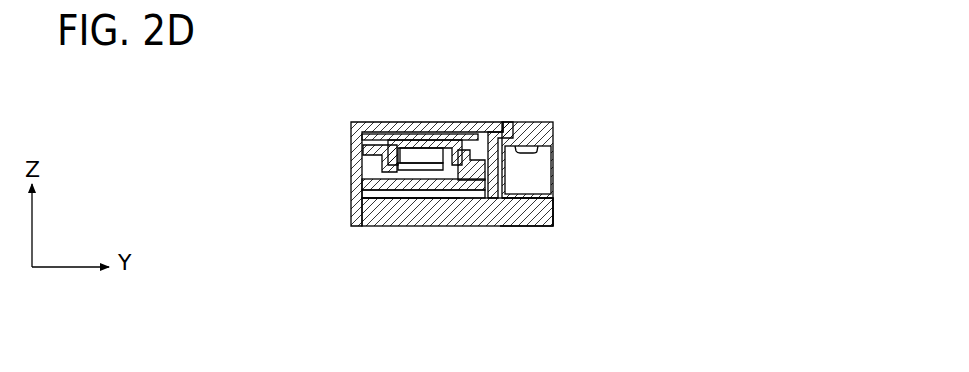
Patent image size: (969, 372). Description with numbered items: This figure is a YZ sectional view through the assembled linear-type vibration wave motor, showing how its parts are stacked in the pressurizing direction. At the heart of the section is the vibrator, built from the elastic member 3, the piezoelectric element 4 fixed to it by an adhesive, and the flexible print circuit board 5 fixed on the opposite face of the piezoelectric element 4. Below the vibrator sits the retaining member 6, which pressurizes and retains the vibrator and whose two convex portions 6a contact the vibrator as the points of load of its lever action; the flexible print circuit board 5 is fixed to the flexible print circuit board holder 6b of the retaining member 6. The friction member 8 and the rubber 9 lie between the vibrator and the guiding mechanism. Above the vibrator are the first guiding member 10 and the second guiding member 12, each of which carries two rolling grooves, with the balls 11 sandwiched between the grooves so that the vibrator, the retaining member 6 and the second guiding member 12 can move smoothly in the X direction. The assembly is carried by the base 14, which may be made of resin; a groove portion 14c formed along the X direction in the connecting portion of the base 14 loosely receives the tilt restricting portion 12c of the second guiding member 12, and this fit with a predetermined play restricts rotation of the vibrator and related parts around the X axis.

The elastic member 3 is at (366, 184).
The piezoelectric element 4 is at (366, 200).
The flexible print circuit board 5 is at (557, 196).
The retaining member 6 is at (475, 227).
The convex portions 6a is at (416, 224).
The flexible print circuit board holder 6b is at (539, 221).
The friction member 8 is at (368, 167).
The rubber 9 is at (405, 139).
The first guiding member 10 is at (362, 136).
The balls 11 is at (420, 139).
The second guiding member 12 is at (362, 121).
The tilt restricting portion 12c is at (507, 124).
The base 14 is at (556, 127).
The groove portion 14c is at (535, 147).